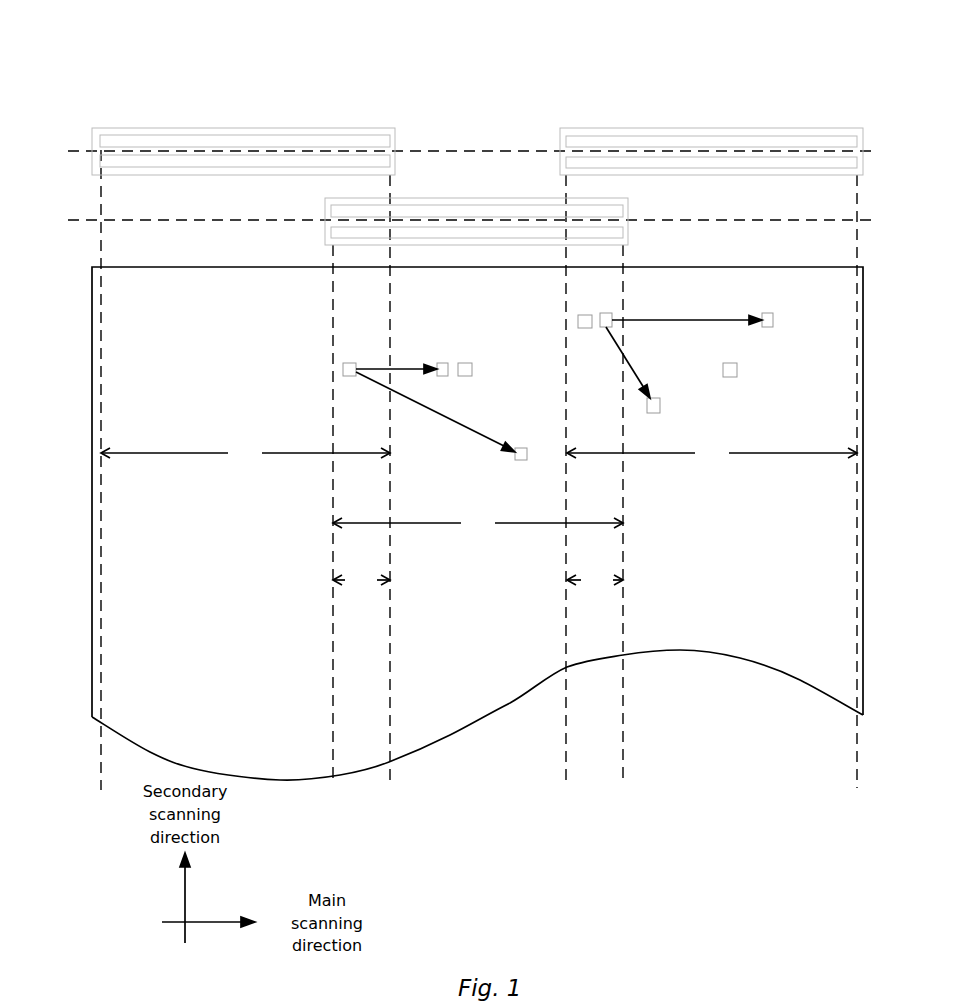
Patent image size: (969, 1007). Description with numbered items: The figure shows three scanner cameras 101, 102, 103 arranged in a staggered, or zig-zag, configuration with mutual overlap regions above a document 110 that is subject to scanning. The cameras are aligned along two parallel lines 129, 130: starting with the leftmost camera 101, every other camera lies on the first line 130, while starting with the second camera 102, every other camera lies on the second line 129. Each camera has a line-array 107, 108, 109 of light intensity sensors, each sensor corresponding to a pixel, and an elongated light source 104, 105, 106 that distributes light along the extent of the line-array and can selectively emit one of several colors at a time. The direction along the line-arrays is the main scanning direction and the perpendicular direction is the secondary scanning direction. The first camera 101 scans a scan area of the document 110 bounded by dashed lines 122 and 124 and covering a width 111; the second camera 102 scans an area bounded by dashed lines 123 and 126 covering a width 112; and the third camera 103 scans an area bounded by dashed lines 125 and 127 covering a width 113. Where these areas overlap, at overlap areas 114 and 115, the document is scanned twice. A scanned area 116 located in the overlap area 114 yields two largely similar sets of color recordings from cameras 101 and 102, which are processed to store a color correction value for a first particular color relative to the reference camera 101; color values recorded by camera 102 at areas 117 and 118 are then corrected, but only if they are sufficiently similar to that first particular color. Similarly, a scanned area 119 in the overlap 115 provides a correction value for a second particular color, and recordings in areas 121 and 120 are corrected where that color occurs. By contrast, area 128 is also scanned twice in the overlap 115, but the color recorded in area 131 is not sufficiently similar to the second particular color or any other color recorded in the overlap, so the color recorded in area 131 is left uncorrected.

The first scanner camera 101 is at (255, 128).
The second scanner camera 102 is at (325, 207).
The third scanner camera 103 is at (607, 128).
The elongated light source 104 is at (372, 140).
The elongated light source 105 is at (607, 207).
The elongated light source 106 is at (588, 139).
The line-array 107 is at (372, 160).
The line-array 108 is at (613, 230).
The line-array 109 is at (588, 160).
The document 110 is at (232, 704).
The width 111 is at (245, 453).
The width 112 is at (478, 523).
The width 113 is at (712, 453).
The overlap area 114 is at (361, 580).
The overlap area 115 is at (595, 580).
The scanned area 116 is at (343, 370).
The recorded area 117 is at (443, 363).
The recorded area 118 is at (515, 460).
The scanned area 119 is at (600, 313).
The area 120 is at (660, 400).
The area 121 is at (762, 313).
The dashed line 122 is at (100, 663).
The dashed line 123 is at (332, 688).
The dashed line 124 is at (390, 663).
The dashed line 125 is at (565, 625).
The dashed line 126 is at (623, 633).
The dashed line 127 is at (472, 376).
The area 128 is at (578, 328).
The second line 129 is at (83, 147).
The first line 130 is at (84, 217).
The area 131 is at (737, 363).